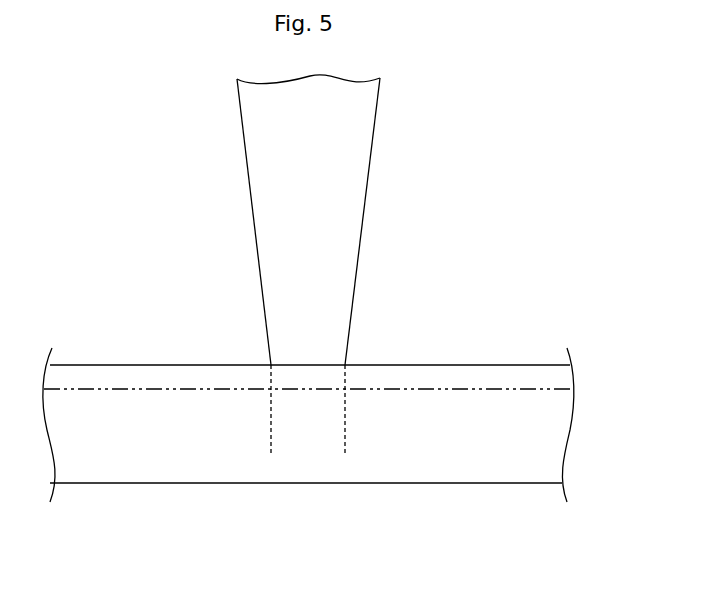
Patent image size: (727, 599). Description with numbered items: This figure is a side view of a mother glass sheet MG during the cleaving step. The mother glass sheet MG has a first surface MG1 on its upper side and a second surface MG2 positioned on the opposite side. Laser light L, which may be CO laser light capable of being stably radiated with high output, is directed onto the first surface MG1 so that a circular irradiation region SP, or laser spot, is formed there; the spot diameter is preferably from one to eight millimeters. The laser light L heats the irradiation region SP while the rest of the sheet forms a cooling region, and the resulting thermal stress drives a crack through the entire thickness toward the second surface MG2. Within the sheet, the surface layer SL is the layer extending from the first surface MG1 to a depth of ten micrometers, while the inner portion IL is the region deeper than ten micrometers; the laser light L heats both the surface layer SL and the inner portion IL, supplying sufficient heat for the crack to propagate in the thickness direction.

The laser light L is at (371, 160).
The mother glass sheet MG is at (336, 411).
The first surface MG1 is at (185, 365).
The second surface MG2 is at (188, 483).
The surface layer SL is at (555, 378).
The inner portion IL is at (535, 431).
The irradiation region SP is at (344, 443).